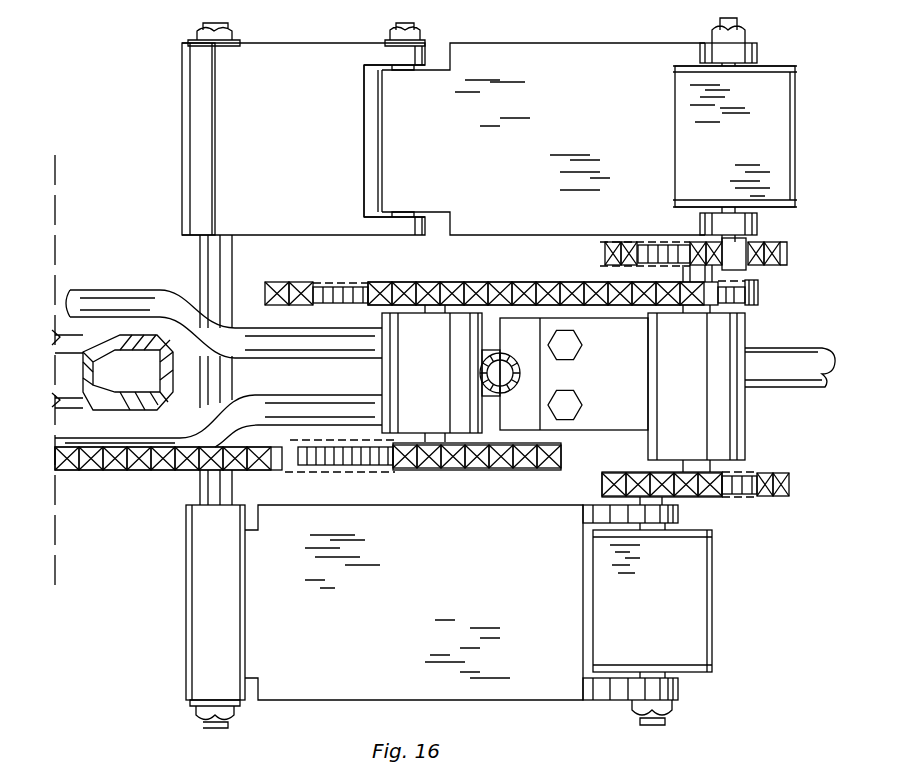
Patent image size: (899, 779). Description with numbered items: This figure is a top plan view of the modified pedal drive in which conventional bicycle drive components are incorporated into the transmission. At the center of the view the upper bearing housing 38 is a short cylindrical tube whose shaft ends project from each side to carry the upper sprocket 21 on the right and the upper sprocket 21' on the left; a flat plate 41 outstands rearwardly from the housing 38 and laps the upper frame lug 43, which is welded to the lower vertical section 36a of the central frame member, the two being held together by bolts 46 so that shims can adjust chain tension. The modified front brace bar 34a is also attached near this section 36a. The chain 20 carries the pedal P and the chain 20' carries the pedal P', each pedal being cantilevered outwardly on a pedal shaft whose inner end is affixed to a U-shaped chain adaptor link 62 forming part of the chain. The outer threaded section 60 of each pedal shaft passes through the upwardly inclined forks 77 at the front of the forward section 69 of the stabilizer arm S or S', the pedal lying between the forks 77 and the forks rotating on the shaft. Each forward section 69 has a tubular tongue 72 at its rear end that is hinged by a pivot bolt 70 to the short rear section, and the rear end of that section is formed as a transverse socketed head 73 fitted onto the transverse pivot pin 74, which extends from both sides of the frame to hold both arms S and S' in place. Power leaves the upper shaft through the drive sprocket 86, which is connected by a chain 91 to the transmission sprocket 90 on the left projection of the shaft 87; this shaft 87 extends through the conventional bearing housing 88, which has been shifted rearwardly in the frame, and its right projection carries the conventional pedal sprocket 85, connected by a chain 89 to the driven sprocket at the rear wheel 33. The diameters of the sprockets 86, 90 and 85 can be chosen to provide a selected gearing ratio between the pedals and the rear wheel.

The socketed head 73 is at (202, 160).
The tubular tongue 72 is at (418, 170).
The pivot bolt 70 is at (413, 30).
The forward section 69 is at (552, 137).
The threaded section 60 is at (737, 22).
The forks 77 is at (740, 50).
The upper sprocket 21' is at (661, 248).
The chain adaptor link 62 is at (745, 262).
The chain 20' is at (789, 249).
The chain 91 is at (497, 283).
The transmission sprocket 90 is at (330, 293).
The drive sprocket 86 is at (757, 292).
The transverse pivot pin 74 is at (210, 272).
The bearing housing 88 is at (395, 378).
The shaft 87 is at (440, 313).
The rear wheel 33 is at (133, 338).
The lower vertical section 36a is at (490, 370).
The upper frame lug 43 is at (532, 350).
The bolts 46 is at (570, 390).
The flat plate 41 is at (633, 352).
The bearing housing 38 is at (722, 337).
The front brace bar 34a is at (793, 365).
The upper sprocket 21 is at (693, 472).
The chain 20 is at (793, 485).
The chain 89 is at (143, 470).
The pedal sprocket 85 is at (350, 465).
The stabilizer arm S is at (414, 623).
The stabilizer arm S' is at (379, 120).
The pedal P is at (673, 601).
The pedal P' is at (751, 136).